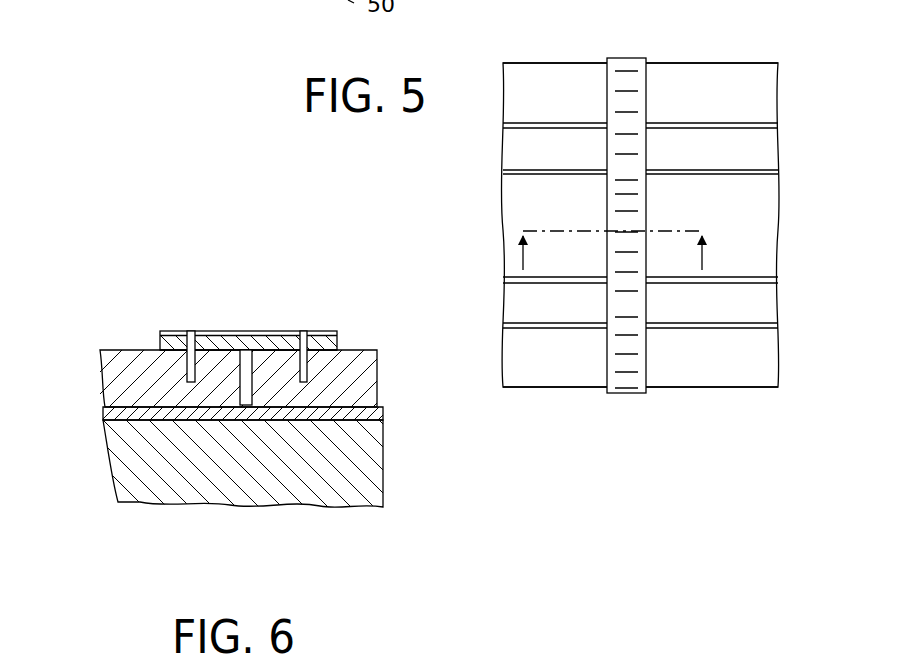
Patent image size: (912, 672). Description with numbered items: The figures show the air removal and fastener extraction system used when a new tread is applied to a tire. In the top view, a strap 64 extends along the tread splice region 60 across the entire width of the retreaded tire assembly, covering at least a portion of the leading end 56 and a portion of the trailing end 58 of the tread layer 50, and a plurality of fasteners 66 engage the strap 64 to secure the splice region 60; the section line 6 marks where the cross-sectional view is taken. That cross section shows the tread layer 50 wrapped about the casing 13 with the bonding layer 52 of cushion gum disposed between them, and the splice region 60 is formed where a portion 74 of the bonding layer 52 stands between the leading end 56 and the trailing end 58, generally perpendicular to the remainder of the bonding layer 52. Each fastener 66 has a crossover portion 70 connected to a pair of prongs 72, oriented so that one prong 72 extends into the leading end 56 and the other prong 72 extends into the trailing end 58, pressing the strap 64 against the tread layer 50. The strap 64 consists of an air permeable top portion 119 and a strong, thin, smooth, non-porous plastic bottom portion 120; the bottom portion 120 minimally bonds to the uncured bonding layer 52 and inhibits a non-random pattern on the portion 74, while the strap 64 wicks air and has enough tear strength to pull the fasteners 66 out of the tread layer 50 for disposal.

In FIG. 6, the casing 13 is at (368, 487).
In FIG. 5, the tread layer 50 is at (677, 93).
In FIG. 6, the tread layer 50 is at (370, 383).
In FIG. 5, the bonding layer 52 is at (682, 349).
In FIG. 6, the bonding layer 52 is at (132, 415).
In FIG. 5, the leading end 56 is at (565, 372).
In FIG. 6, the leading end 56 is at (207, 397).
In FIG. 5, the trailing end 58 is at (687, 370).
In FIG. 6, the trailing end 58 is at (285, 392).
In FIG. 5, the tread splice region 60 is at (624, 400).
In FIG. 5, the strap 64 is at (645, 383).
In FIG. 6, the strap 64 is at (297, 289).
In FIG. 5, the fastener 66 is at (622, 112).
In FIG. 6, the crossover portion 70 is at (222, 340).
In FIG. 6, the prongs 72 is at (190, 357).
In FIG. 6, the portion of bonding layer 74 is at (250, 393).
In FIG. 6, the top portion 119 is at (317, 335).
In FIG. 6, the bottom portion 120 is at (337, 352).
In FIG. 5, the section line 6- 6 is at (623, 250).